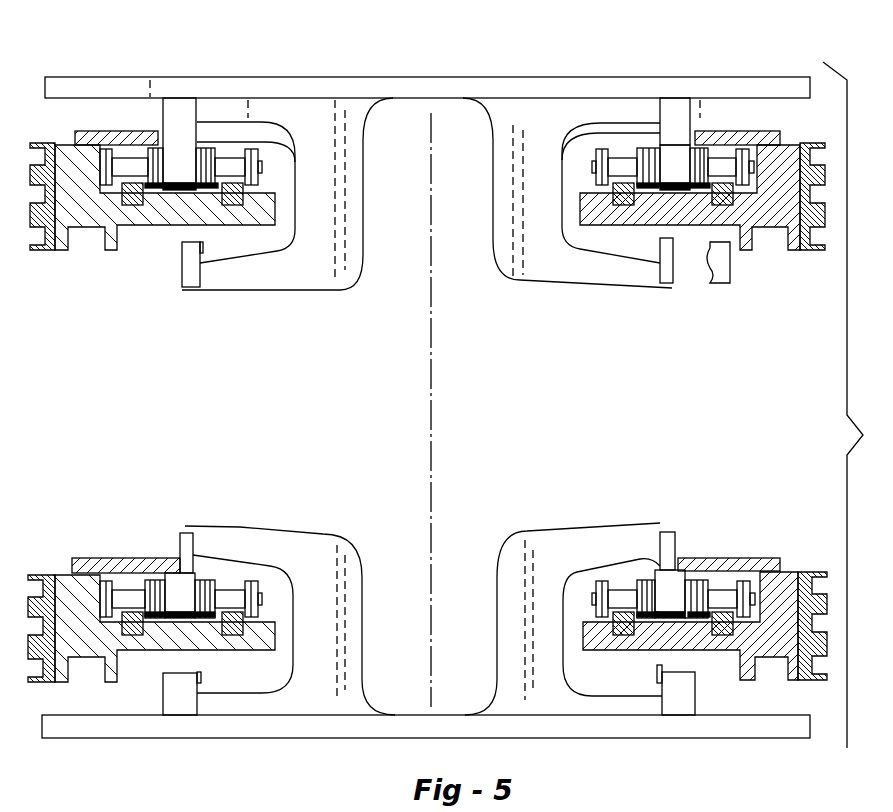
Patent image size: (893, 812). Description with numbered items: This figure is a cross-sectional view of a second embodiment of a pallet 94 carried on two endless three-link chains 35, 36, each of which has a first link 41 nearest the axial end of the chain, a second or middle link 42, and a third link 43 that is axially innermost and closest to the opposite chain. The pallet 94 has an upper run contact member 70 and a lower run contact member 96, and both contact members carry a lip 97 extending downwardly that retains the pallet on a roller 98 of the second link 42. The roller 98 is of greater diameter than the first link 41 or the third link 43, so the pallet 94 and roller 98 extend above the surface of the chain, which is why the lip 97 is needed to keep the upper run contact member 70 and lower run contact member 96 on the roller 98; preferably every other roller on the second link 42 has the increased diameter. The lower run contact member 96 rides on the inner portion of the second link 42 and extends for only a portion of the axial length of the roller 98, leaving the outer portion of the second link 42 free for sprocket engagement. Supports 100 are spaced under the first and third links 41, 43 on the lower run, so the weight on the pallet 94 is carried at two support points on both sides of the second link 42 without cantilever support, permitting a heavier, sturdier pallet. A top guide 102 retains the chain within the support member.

The second embodiment of a pallet 94 is at (312, 72).
The upper run contact member 70 is at (673, 113).
The endless three-link chain 35 is at (293, 142).
The endless three-link chain 36 is at (750, 160).
The lip 97 is at (575, 123).
The roller 98 is at (672, 160).
The third link 43 is at (596, 165).
The second link 42 is at (673, 183).
The first link 41 is at (733, 163).
The lower run contact member 96 is at (668, 263).
The supports 100 is at (217, 207).
The top guide 102 is at (740, 560).